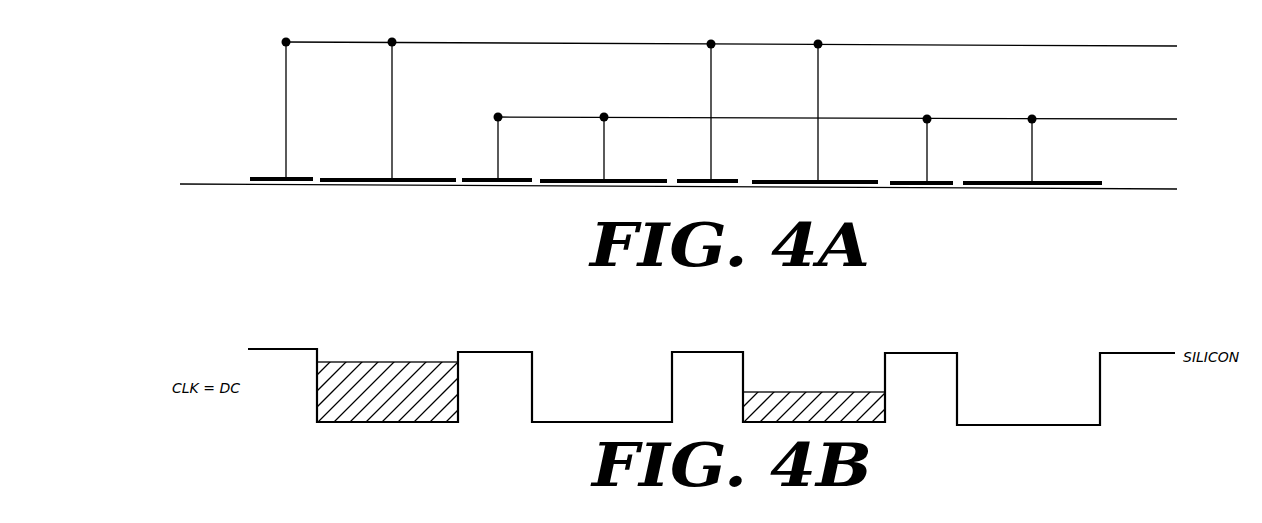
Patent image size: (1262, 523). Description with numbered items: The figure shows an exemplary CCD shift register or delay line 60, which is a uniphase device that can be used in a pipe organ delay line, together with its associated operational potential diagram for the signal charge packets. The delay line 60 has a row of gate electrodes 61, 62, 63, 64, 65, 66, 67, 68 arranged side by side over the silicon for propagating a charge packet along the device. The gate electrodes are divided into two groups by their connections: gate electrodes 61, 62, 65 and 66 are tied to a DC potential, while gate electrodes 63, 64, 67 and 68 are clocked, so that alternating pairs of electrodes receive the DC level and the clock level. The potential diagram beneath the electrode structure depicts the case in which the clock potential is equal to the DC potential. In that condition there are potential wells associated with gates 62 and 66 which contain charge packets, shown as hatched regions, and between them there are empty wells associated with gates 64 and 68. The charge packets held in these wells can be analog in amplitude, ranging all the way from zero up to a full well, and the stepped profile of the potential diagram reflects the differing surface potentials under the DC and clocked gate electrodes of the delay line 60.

The delay line 60 is at (232, 105).
The gate electrode 61 is at (268, 177).
The gate electrode 62 is at (367, 178).
The gate electrode 63 is at (510, 178).
The gate electrode 64 is at (626, 178).
The gate electrode 65 is at (725, 178).
The gate electrode 66 is at (798, 180).
The gate electrode 67 is at (937, 180).
The gate electrode 68 is at (1048, 180).